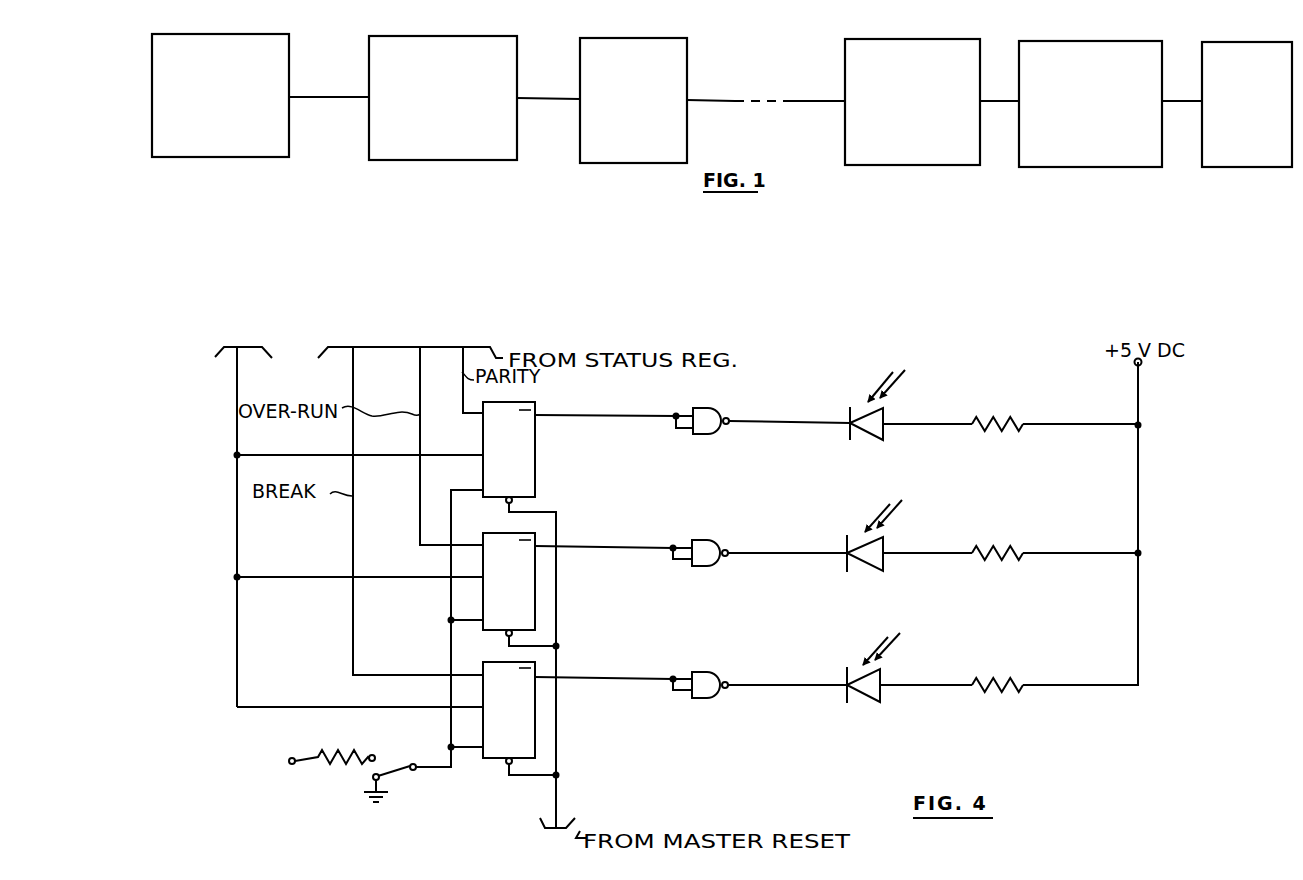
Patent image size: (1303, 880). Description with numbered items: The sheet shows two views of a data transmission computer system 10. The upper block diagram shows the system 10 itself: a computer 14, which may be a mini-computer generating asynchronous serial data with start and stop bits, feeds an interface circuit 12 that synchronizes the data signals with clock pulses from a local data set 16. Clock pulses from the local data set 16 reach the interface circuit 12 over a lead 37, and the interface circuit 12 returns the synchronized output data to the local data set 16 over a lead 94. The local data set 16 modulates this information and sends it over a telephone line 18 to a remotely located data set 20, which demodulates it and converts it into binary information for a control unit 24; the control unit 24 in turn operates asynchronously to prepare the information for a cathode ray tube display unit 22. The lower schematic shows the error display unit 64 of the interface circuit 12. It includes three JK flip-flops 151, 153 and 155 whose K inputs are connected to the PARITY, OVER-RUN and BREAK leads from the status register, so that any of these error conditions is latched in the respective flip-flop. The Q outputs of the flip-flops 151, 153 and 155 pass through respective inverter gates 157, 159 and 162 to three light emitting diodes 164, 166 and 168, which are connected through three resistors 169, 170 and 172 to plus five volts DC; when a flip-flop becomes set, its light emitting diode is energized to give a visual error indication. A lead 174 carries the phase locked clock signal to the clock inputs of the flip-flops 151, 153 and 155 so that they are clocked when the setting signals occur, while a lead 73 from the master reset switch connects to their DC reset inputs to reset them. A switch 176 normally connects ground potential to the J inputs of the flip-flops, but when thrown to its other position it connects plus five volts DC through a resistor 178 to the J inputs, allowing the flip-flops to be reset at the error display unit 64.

In FIG. 1, the data transmission computer system 10 is at (546, 181).
In FIG. 1, the interface circuit 12 is at (443, 98).
In FIG. 1, the computer 14 is at (220, 95).
In FIG. 1, the local data set 16 is at (633, 100).
In FIG. 1, the telephone line 18 is at (802, 101).
In FIG. 1, the remotely located data set 20 is at (912, 102).
In FIG. 1, the cathode ray tube display unit 22 is at (1247, 104).
In FIG. 1, the control unit 24 is at (1090, 104).
In FIG. 1, the lead 37 is at (300, 96).
In FIG. 1, the lead 94 is at (522, 97).
In FIG. 4, the error display unit 64 is at (688, 780).
In FIG. 4, the lead 73 is at (556, 791).
In FIG. 4, the JK flip-flop 151 is at (537, 452).
In FIG. 4, the JK flip-flop 153 is at (535, 603).
In FIG. 4, the JK flip-flop 155 is at (535, 722).
In FIG. 4, the inverter gate 157 is at (714, 436).
In FIG. 4, the inverter gate 159 is at (706, 566).
In FIG. 4, the inverter gate 162 is at (706, 698).
In FIG. 4, the light emitting diode 164 is at (886, 432).
In FIG. 4, the light emitting diode 166 is at (884, 565).
In FIG. 4, the light emitting diode 168 is at (868, 702).
In FIG. 4, the resistor 169 is at (993, 430).
In FIG. 4, the resistor 170 is at (993, 560).
In FIG. 4, the resistor 172 is at (993, 692).
In FIG. 4, the lead 174 is at (242, 368).
In FIG. 4, the switch 176 is at (412, 750).
In FIG. 4, the resistor 178 is at (318, 765).